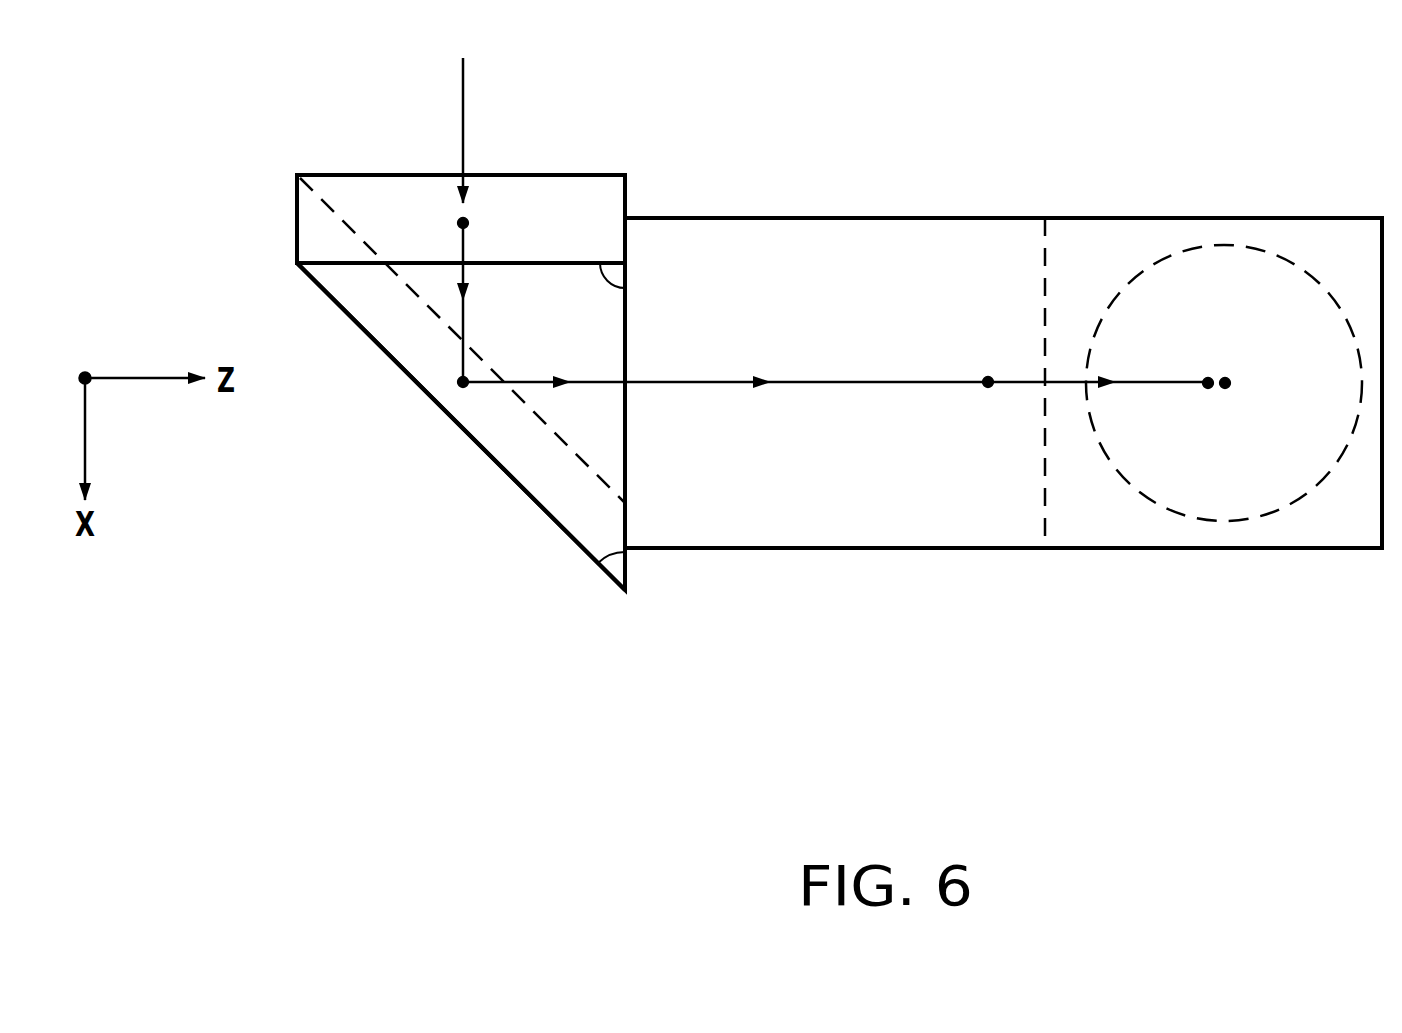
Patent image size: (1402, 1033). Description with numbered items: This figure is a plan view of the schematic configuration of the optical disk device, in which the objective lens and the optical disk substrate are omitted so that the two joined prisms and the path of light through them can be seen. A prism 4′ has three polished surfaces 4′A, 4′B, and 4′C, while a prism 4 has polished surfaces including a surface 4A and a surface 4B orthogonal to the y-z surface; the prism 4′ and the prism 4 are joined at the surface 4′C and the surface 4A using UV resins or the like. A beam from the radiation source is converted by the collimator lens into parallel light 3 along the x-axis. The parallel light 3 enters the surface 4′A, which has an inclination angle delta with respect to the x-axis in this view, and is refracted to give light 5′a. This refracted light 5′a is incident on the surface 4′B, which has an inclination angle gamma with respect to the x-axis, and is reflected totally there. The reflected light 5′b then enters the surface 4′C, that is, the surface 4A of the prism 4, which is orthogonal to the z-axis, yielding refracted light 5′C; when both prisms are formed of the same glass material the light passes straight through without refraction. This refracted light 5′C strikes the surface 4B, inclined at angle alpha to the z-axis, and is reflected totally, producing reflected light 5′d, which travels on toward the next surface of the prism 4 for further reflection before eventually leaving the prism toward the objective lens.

The parallel light 3 is at (463, 98).
The prism 4 is at (906, 556).
The prism 4′ is at (358, 336).
The surface 4′A is at (585, 197).
The surface 4′B is at (528, 493).
The surface 4′C is at (625, 333).
The surface 4A is at (625, 368).
The surface 4B is at (962, 247).
The refracted light 5′a is at (463, 305).
The reflected light 5′b is at (542, 384).
The refracted light 5′C is at (813, 385).
The reflected light 5′d is at (1148, 384).